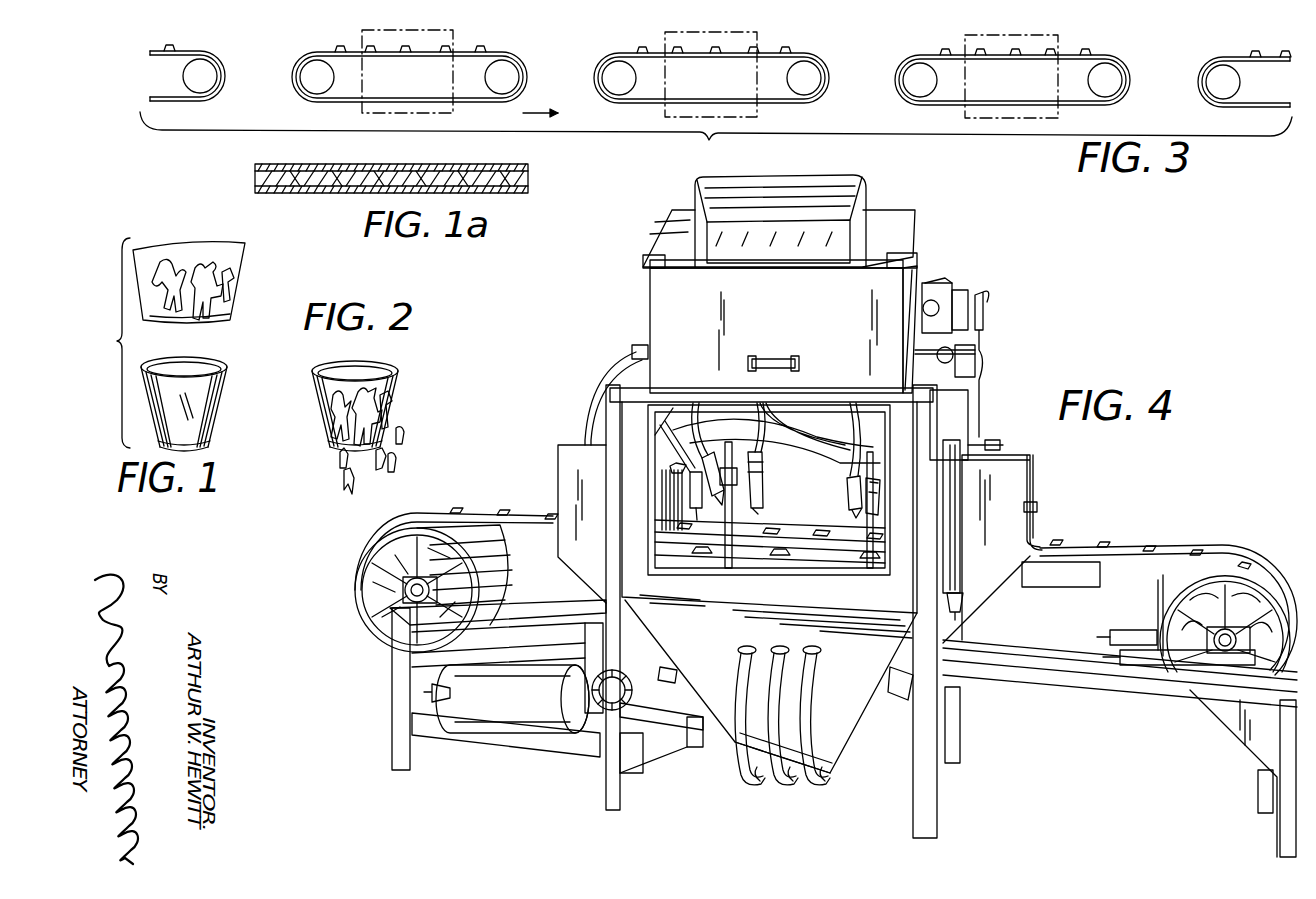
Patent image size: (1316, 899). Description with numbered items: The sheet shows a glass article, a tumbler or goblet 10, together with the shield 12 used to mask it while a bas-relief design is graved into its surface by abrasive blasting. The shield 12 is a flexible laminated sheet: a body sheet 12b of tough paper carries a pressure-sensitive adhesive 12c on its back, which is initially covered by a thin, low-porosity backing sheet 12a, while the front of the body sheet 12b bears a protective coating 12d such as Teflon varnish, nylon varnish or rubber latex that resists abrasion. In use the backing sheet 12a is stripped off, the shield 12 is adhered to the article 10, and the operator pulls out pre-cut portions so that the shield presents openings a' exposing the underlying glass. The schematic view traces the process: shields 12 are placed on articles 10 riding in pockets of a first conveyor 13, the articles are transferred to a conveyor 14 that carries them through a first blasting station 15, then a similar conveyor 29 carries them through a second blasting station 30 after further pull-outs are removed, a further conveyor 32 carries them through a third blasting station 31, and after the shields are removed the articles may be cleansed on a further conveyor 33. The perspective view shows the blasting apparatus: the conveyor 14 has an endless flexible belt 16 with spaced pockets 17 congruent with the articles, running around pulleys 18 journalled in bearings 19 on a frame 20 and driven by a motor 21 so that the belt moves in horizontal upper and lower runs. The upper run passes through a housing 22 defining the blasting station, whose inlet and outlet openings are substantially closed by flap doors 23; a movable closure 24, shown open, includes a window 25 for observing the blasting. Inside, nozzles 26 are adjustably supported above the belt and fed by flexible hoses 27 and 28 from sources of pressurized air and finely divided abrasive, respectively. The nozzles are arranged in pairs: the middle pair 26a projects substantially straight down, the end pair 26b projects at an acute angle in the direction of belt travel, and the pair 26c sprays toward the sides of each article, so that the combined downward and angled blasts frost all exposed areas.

In FIG. 3, the tumbler or goblet 10 is at (338, 49).
In FIG. 1, the tumbler or goblet 10 is at (213, 400).
In FIG. 2, the tumbler or goblet 10 is at (372, 369).
In FIG. 1, the shield 12 is at (233, 300).
In FIG. 2, the shield 12 is at (392, 392).
In FIG. 1A, the backing sheet 12a is at (333, 164).
In FIG. 1A, the body sheet 12b is at (262, 184).
In FIG. 1A, the pressure-sensitive adhesive 12c is at (260, 168).
In FIG. 1A, the protective coating 12d is at (270, 193).
In FIG. 3, the first conveyor 13 is at (175, 101).
In FIG. 3, the conveyor 14 is at (333, 100).
In FIG. 4, the conveyor 14 is at (1177, 541).
In FIG. 3, the first blasting station 15 is at (458, 37).
In FIG. 4, the first blasting station 15 is at (997, 377).
In FIG. 4, the endless flexible belt 16 is at (1123, 542).
In FIG. 4, the pockets 17 is at (457, 510).
In FIG. 4, the pulleys 18 is at (510, 577).
In FIG. 4, the bearings 19 is at (402, 605).
In FIG. 4, the frame 20 is at (1067, 673).
In FIG. 4, the motor 21 is at (500, 707).
In FIG. 4, the housing 22 is at (630, 423).
In FIG. 4, the flap doors 23 is at (1035, 512).
In FIG. 4, the movable closure 24 is at (662, 307).
In FIG. 4, the window 25 is at (838, 237).
In FIG. 4, the nozzles 26 is at (847, 488).
In FIG. 4, the middle pair of nozzles 26a is at (762, 499).
In FIG. 4, the end pair of nozzles 26b is at (722, 493).
In FIG. 4, the side nozzle pair 26c is at (866, 505).
In FIG. 4, the flexible hoses 27 is at (773, 408).
In FIG. 4, the flexible hoses 28 is at (853, 413).
In FIG. 3, the conveyor 29 is at (633, 103).
In FIG. 3, the second blasting station 30 is at (758, 40).
In FIG. 3, the third blasting station 31 is at (1050, 43).
In FIG. 3, the conveyor 32 is at (937, 107).
In FIG. 3, the conveyor 33 is at (1247, 107).
In FIG. 2, the openings a' is at (364, 465).